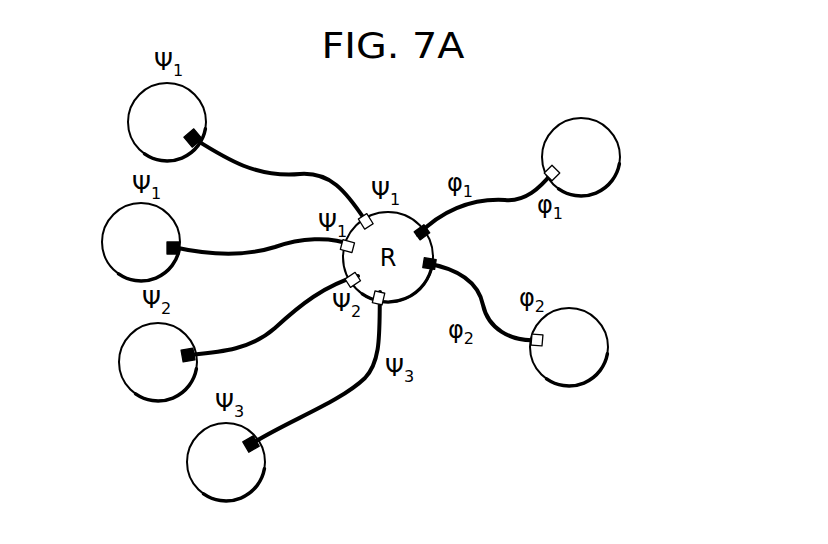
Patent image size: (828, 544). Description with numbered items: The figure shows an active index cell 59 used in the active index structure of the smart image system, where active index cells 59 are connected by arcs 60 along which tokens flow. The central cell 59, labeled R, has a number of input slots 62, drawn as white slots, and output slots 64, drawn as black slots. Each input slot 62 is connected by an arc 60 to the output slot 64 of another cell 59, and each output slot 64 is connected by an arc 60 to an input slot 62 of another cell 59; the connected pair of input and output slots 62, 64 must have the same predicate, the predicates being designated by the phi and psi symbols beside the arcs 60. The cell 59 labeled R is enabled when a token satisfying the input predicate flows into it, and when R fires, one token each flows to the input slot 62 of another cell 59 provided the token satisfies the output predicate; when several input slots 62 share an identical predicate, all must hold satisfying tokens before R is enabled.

The active index cell 59 is at (133, 137).
The arc 60 is at (333, 180).
The input slot 62 is at (365, 217).
The output slot 64 is at (202, 140).